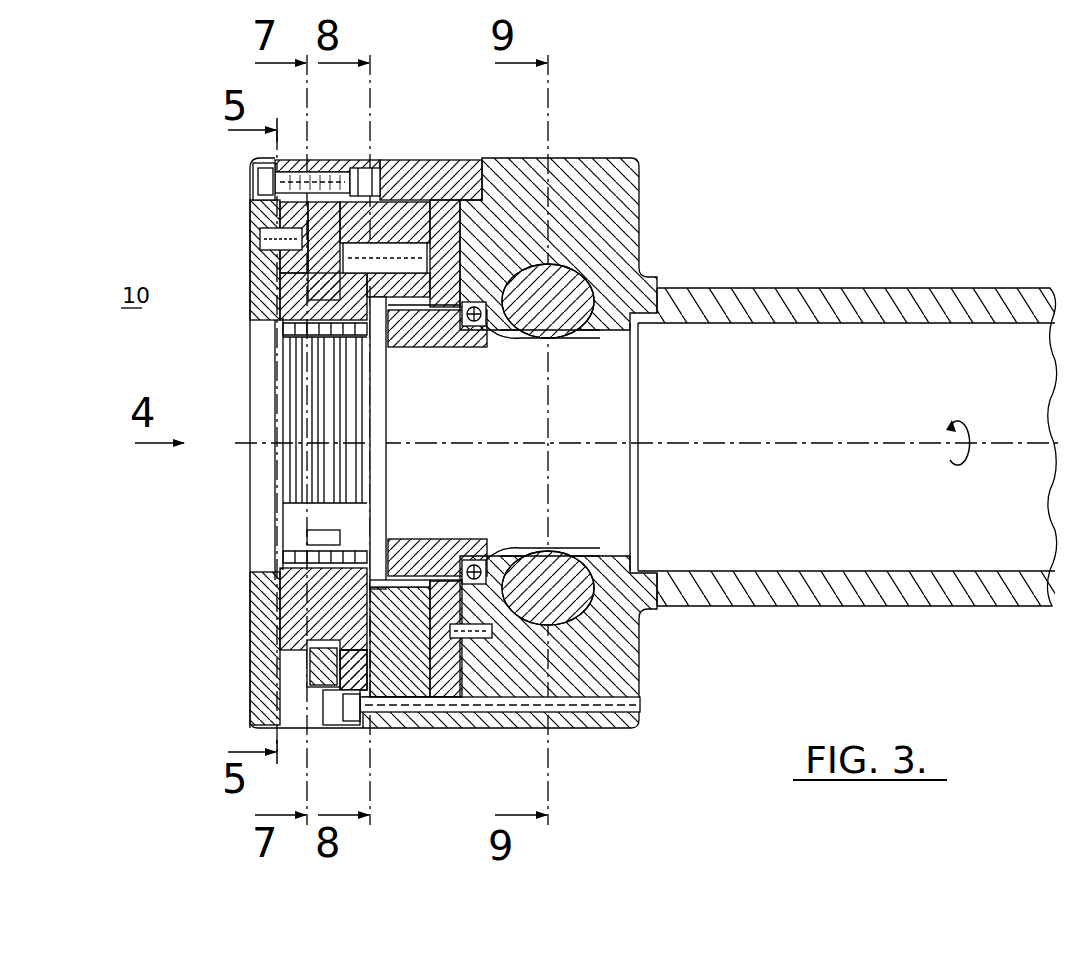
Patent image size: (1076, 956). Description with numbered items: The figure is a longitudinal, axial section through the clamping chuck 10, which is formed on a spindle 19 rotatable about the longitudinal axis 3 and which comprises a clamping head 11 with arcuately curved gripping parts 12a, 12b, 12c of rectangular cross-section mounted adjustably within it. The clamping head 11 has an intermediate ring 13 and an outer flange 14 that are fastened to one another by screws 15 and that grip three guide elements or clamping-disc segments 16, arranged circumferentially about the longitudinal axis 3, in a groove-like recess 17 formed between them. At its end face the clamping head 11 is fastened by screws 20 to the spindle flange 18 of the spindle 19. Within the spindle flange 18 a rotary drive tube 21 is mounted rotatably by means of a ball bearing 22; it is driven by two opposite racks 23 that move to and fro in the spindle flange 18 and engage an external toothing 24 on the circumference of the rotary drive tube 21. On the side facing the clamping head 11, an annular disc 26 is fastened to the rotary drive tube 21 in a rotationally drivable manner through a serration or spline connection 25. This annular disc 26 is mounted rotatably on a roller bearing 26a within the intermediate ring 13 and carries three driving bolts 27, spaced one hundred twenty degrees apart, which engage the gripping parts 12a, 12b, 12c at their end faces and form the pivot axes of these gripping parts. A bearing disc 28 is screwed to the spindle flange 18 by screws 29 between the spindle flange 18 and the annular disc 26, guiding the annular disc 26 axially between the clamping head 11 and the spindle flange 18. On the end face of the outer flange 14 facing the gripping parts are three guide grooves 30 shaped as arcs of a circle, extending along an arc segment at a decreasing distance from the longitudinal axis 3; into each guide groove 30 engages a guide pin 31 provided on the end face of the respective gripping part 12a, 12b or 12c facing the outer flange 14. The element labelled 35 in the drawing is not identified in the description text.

The longitudinal axis 3 is at (866, 448).
The clamping chuck 10 is at (136, 295).
The clamping head 11 is at (452, 78).
The gripping part 12a is at (300, 298).
The gripping part 12b is at (300, 372).
The gripping part 12c is at (300, 590).
The intermediate ring 13 is at (400, 165).
The outer flange 14 is at (262, 630).
The screws 15 is at (252, 182).
The clamping-disc segments 16 is at (343, 172).
The recess 17 is at (318, 170).
The spindle flange 18 is at (604, 190).
The spindle 19 is at (868, 300).
The screws 20 is at (352, 728).
The rotary drive tube 21 is at (424, 332).
The ball bearing 22 is at (478, 332).
The racks 23 is at (640, 250).
The external toothing 24 is at (660, 277).
The spline connection 25 is at (446, 640).
The annular disc 26 is at (425, 650).
The roller bearing 26a is at (410, 690).
The driving bolts 27 is at (410, 250).
The bearing disc 28 is at (452, 250).
The screws 29 is at (478, 690).
The guide grooves 30 is at (252, 225).
The guide pin 31 is at (258, 240).
The spacer 35 is at (262, 282).